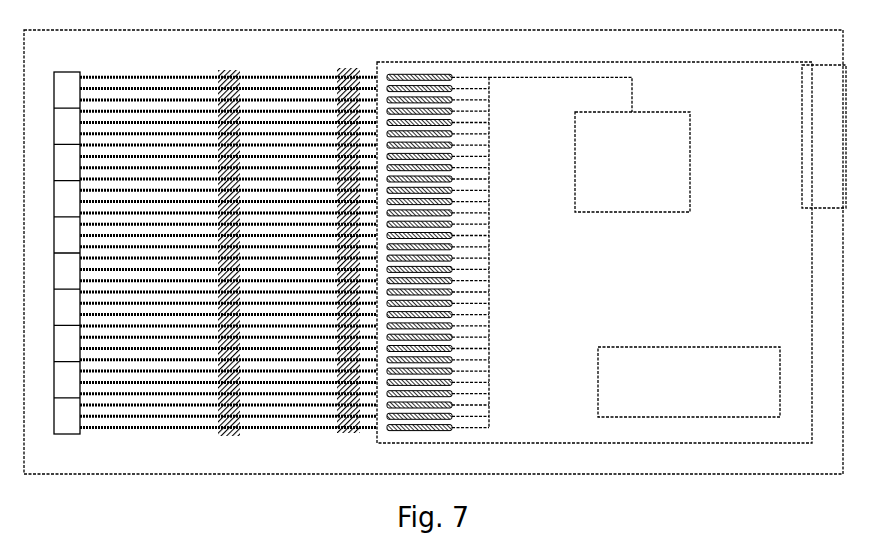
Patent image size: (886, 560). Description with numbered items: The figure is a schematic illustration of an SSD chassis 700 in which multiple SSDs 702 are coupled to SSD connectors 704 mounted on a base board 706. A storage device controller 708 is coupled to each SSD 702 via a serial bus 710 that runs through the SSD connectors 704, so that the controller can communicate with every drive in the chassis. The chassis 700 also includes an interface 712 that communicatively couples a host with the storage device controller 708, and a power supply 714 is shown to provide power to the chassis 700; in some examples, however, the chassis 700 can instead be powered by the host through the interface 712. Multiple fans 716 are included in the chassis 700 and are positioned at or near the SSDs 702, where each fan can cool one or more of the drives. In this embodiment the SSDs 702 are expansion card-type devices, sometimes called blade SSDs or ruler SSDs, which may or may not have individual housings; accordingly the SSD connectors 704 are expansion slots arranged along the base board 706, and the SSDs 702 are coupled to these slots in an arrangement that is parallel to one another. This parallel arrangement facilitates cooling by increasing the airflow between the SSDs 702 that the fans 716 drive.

The SSD chassis 700 is at (433, 252).
The SSDs 702 is at (197, 77).
The SSD connectors 704 is at (427, 77).
The base board 706 is at (594, 252).
The storage device controller 708 is at (589, 144).
The serial bus 710 is at (489, 243).
The interface 712 is at (667, 136).
The power supply 714 is at (689, 382).
The fans 716 is at (58, 72).